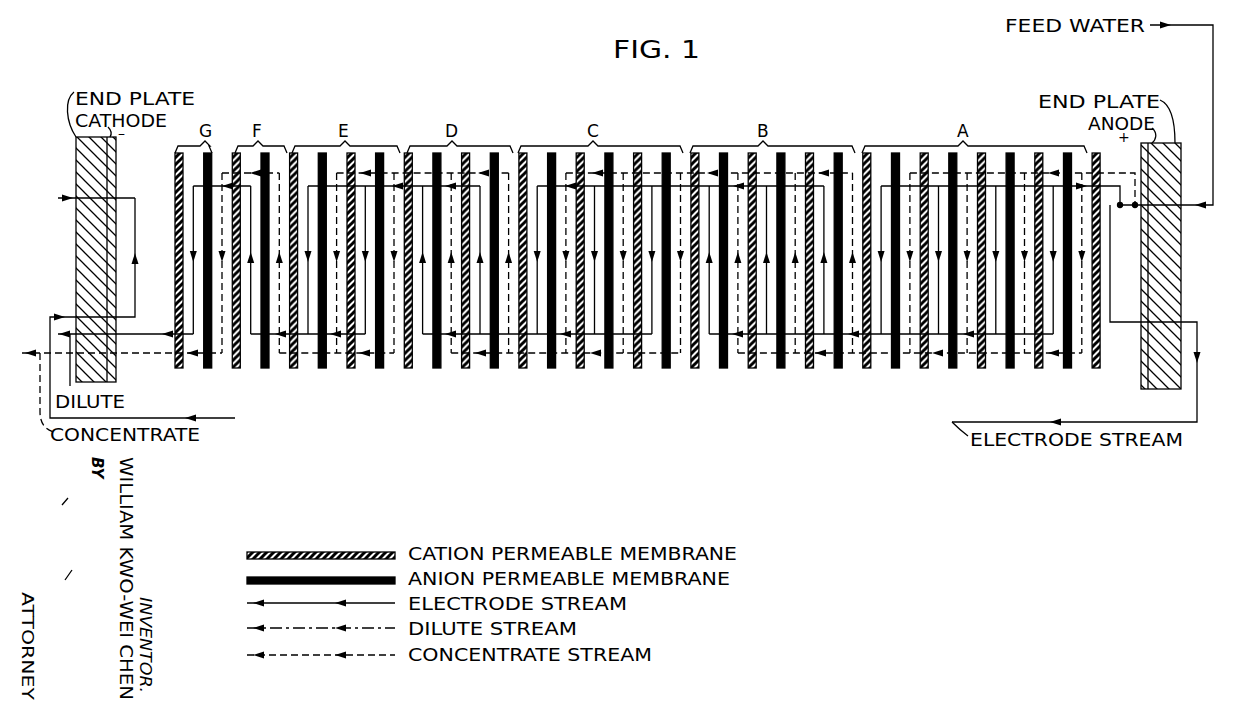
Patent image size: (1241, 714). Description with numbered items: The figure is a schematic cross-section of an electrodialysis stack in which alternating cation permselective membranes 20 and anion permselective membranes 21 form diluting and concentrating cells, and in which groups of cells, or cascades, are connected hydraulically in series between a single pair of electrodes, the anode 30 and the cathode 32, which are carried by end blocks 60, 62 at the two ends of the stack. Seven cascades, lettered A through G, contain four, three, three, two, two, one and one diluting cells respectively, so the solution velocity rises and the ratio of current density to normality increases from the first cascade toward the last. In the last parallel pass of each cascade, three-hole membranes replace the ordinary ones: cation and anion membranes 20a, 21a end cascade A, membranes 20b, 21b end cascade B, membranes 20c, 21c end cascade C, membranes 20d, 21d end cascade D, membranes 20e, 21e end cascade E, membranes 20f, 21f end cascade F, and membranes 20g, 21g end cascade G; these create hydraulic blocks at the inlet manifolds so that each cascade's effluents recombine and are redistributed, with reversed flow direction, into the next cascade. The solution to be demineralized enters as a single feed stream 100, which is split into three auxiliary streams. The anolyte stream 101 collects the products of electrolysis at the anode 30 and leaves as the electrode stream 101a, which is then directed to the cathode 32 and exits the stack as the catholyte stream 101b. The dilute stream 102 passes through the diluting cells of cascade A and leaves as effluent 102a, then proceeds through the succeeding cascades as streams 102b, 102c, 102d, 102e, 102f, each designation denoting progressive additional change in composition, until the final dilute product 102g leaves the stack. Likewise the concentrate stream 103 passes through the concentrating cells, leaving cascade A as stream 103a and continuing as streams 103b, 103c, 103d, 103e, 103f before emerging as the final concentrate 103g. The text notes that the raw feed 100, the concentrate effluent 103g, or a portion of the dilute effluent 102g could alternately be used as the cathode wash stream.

The cation permselective membrane 20 is at (349, 369).
The anion permselective membrane 21 is at (376, 370).
The cation membrane of last parallel pass 20a is at (863, 370).
The anion membrane of last parallel pass 21a is at (893, 369).
The cation membrane of last pass of cascade B 20b is at (692, 370).
The anion membrane of last pass of cascade B 21b is at (721, 370).
The cation membrane of last pass of cascade C 20c is at (520, 370).
The anion membrane of last pass of cascade C 21c is at (550, 369).
The cation membrane of last pass of cascade D 20d is at (406, 370).
The anion membrane of last pass of cascade D 21d is at (435, 370).
The cation membrane of last pass of cascade E 20e is at (292, 370).
The anion membrane of last pass of cascade E 21e is at (320, 370).
The cation membrane of last pass of cascade F 20f is at (234, 370).
The anion membrane of last pass of cascade F 21f is at (263, 370).
The cation membrane of last pass of cascade G 20g is at (176, 370).
The anion membrane of last pass of cascade G 21g is at (205, 370).
The anode 30 is at (1145, 371).
The cathode 32 is at (116, 197).
The end block 60 is at (1156, 389).
The end block 62 is at (86, 226).
The feed stream 100 is at (1213, 74).
The anolyte stream 101 is at (1110, 278).
The electrode stream effluent 101a is at (235, 418).
The catholyte effluent stream 101b is at (58, 198).
The dilute stream 102 is at (1110, 190).
The dilute stream effluent from cascade A 102a is at (880, 366).
The dilute stream effluent from cascade B 102b is at (709, 186).
The dilute stream effluent from cascade C 102c is at (537, 366).
The dilute stream effluent from cascade D 102d is at (423, 186).
The dilute stream effluent from cascade E 102e is at (333, 366).
The dilute stream effluent from cascade F 102f is at (193, 186).
The dilute stream effluent from cascade G 102g is at (119, 334).
The concentrate stream 103 is at (1135, 192).
The concentrate stream effluent from cascade A 103a is at (868, 366).
The concentrate stream effluent from cascade B 103b is at (680, 173).
The concentrate stream effluent from cascade C 103c is at (540, 366).
The concentrate stream effluent from cascade D 103d is at (394, 173).
The concentrate stream effluent from cascade E 103e is at (336, 366).
The concentrate stream effluent from cascade F 103f is at (222, 173).
The concentrate stream effluent from cascade G 103g is at (32, 353).